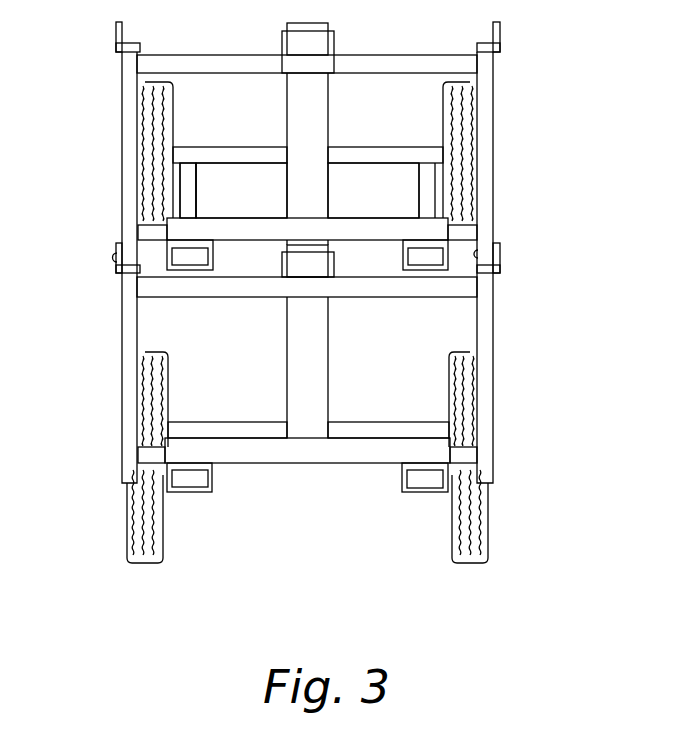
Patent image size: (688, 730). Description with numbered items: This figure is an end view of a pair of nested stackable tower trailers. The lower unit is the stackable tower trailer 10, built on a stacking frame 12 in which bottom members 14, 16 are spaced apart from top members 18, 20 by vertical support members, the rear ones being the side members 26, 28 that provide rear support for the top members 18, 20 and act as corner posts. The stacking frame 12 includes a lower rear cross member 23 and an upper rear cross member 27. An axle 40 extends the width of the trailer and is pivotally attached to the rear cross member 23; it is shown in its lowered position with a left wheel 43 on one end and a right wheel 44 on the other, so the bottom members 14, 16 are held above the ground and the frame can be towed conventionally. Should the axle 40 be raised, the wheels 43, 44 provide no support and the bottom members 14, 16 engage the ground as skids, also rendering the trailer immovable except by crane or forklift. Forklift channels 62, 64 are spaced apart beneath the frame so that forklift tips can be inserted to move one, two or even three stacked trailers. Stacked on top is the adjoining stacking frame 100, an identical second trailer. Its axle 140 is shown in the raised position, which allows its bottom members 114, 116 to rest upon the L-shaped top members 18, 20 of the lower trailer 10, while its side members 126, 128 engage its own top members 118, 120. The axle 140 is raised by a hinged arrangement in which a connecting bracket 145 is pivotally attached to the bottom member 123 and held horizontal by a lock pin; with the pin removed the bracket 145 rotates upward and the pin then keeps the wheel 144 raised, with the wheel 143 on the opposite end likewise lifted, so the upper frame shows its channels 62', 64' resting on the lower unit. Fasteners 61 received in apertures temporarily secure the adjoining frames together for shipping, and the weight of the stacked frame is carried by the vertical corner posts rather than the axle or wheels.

The stackable tower trailer 10 is at (517, 347).
The stacking frame 12 is at (257, 467).
The bottom member 14 is at (212, 493).
The bottom member 16 is at (417, 493).
The top member 18 is at (117, 273).
The top member 20 is at (498, 272).
The lower rear cross member 23 is at (292, 458).
The vertical support member 26 is at (495, 432).
The upper rear cross member 27 is at (377, 293).
The vertical support member 28 is at (122, 443).
The axle 40 is at (345, 420).
The left wheel 43 is at (165, 557).
The right wheel 44 is at (452, 547).
The fastener 61 is at (530, 230).
The forklift channel 62 is at (213, 435).
The left bracket insert (upper) 62' is at (206, 295).
The forklift channel 64 is at (425, 432).
The right bracket insert (upper) 64' is at (437, 293).
The adjoining stacking frame 100 is at (508, 163).
The bottom member 114 is at (213, 260).
The bottom member 116 is at (403, 252).
The top member 118 is at (115, 37).
The top member 120 is at (500, 35).
The bottom member 123 is at (358, 190).
The side member 126 is at (493, 127).
The side member 128 is at (122, 142).
The axle 140 is at (358, 162).
The left wheel (upper) 143 is at (173, 125).
The wheel 144 is at (443, 110).
The connecting bracket 145 is at (197, 193).